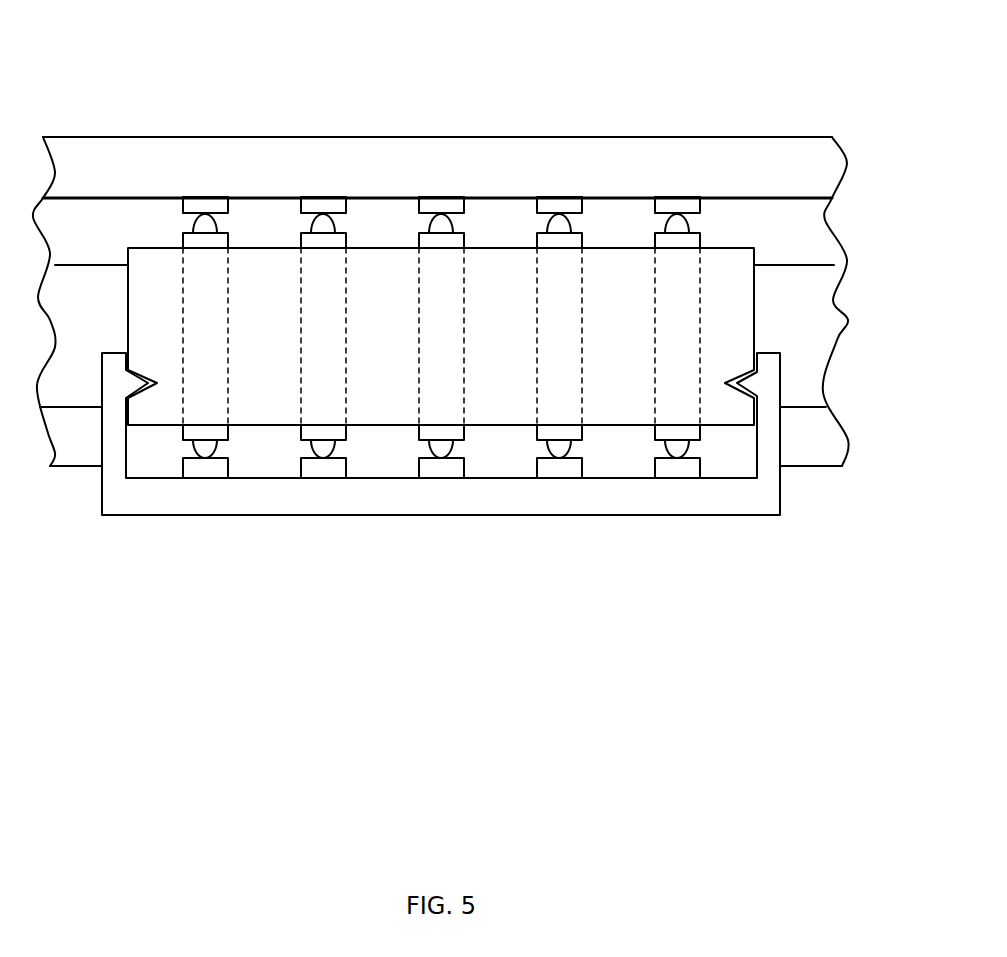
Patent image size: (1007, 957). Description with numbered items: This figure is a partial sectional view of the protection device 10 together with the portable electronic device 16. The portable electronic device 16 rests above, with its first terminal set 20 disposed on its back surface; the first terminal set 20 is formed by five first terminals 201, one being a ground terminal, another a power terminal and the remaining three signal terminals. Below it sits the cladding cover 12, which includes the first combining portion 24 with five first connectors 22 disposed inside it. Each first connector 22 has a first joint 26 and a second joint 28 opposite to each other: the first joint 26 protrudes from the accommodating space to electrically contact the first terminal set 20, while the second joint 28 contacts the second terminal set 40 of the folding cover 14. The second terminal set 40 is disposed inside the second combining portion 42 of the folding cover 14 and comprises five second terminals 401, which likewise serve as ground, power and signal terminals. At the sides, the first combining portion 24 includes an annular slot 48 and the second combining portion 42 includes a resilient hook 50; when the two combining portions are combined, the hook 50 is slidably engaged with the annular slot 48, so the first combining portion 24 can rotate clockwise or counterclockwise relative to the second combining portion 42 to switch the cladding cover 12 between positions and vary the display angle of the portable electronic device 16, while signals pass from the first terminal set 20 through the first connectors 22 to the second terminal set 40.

The protection device 10 is at (850, 568).
The cladding cover 12 is at (765, 297).
The folding cover 14 is at (817, 437).
The portable electronic device 16 is at (782, 156).
The first terminal set 20 is at (449, 130).
The first terminal 201 is at (715, 72).
The first connector 22 is at (191, 340).
The first combining portion 24 is at (728, 262).
The first joint 26 is at (205, 228).
The second joint 28 is at (200, 447).
The second terminal set 40 is at (441, 546).
The second terminal 401 is at (675, 600).
The second combining portion 42 is at (110, 500).
The annular slot 48 is at (143, 373).
The hook 50 is at (128, 384).